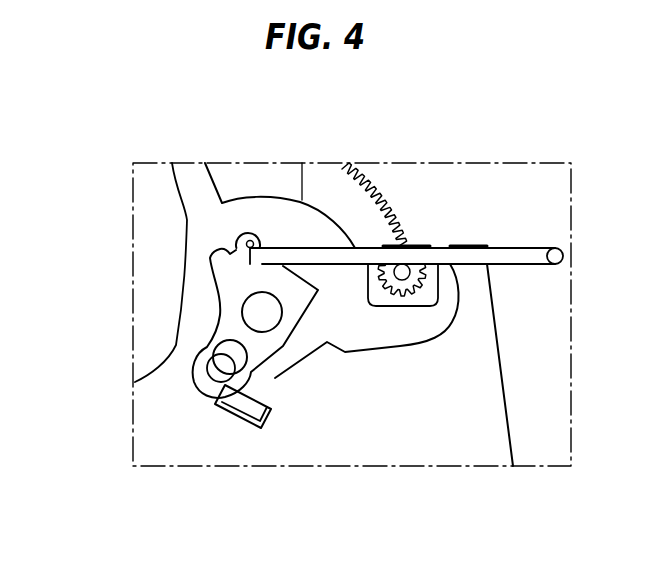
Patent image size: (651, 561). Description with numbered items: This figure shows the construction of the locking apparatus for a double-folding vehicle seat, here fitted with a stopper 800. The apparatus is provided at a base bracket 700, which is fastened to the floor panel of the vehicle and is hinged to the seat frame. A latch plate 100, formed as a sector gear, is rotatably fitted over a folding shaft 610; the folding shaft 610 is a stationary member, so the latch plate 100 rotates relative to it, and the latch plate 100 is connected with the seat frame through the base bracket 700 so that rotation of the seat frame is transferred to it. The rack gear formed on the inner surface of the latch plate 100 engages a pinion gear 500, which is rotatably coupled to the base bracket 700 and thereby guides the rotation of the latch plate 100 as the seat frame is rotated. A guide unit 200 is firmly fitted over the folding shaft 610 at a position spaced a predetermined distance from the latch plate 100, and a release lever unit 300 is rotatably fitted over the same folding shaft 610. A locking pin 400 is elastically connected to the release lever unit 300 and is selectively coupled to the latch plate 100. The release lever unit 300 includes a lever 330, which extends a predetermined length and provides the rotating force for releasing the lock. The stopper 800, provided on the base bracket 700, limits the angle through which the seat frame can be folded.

The latch plate 100 is at (358, 330).
The guide unit 200 is at (233, 272).
The release lever unit 300 is at (295, 287).
The lever 330 is at (515, 258).
The locking pin 400 is at (228, 358).
The pinion gear 500 is at (413, 293).
The folding shaft 610 is at (262, 313).
The base bracket 700 is at (310, 420).
The stopper 800 is at (233, 405).